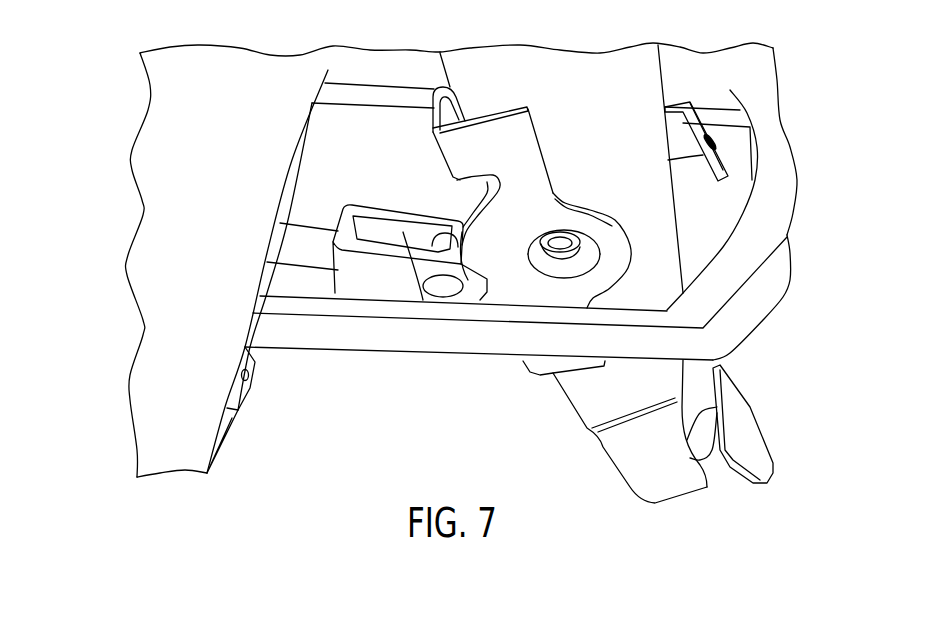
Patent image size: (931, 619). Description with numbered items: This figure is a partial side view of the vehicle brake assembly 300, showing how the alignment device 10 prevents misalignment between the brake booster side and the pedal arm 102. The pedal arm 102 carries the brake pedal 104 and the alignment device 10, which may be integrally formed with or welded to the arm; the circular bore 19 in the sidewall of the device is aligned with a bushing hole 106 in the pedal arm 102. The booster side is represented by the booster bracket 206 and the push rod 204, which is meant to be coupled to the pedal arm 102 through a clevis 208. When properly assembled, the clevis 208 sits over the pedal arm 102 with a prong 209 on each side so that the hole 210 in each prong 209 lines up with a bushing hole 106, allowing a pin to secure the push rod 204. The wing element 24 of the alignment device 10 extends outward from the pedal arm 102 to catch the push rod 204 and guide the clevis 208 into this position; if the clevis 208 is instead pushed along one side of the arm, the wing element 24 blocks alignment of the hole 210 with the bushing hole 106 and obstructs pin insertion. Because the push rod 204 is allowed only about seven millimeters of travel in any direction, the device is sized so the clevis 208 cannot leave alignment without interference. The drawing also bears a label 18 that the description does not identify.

The vehicle brake assembly 300 is at (87, 156).
The pedal arm 102 is at (597, 67).
The brake pedal 104 is at (750, 427).
The bushing hole 106 is at (590, 233).
The alignment device 10 is at (445, 148).
The boss 18 is at (613, 243).
The circular bore 19 is at (575, 262).
The wing element 24 is at (477, 203).
The push rod 204 is at (303, 230).
The booster bracket 206 is at (150, 372).
The clevis 208 is at (332, 290).
The prong 209 is at (367, 287).
The hole 210 is at (453, 250).